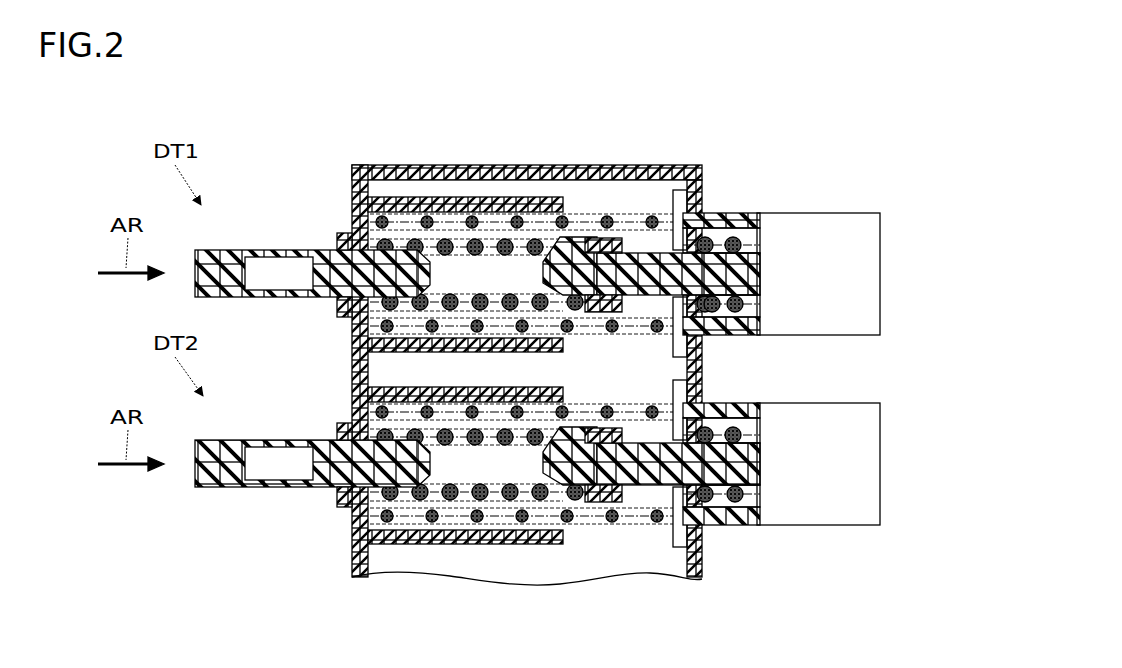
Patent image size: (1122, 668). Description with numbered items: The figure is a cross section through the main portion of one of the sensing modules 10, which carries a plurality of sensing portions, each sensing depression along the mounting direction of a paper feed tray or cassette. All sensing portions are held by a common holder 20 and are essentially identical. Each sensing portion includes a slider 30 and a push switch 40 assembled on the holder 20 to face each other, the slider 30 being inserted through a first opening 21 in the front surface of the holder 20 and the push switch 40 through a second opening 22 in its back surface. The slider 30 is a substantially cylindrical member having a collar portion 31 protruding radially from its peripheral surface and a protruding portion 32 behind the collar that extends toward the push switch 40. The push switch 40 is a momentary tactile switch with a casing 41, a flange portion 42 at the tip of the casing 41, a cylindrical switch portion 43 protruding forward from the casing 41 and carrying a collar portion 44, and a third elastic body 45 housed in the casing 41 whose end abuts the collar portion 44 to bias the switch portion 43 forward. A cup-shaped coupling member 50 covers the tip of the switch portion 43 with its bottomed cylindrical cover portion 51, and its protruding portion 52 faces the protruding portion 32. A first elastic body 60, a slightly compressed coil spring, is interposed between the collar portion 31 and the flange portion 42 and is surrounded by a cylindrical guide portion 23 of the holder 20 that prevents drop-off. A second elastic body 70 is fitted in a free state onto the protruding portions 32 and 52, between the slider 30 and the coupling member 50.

The sensing module 10 is at (862, 80).
The holder 20 is at (462, 172).
The first opening 21 is at (340, 266).
The second opening 22 is at (702, 222).
The cylindrical guide portion 23 is at (497, 203).
The slider 30 is at (243, 274).
The collar portion 31 is at (394, 215).
The protruding portion 32 is at (410, 277).
The push switch 40 is at (816, 228).
The casing 41 is at (723, 222).
The flange portion 42 is at (678, 207).
The switch portion 43 is at (640, 275).
The collar portion 44 is at (717, 308).
The third elastic body 45 is at (737, 246).
The coupling member 50 is at (583, 262).
The cover portion 51 is at (605, 240).
The protruding portion 52 is at (548, 268).
The first elastic body 60 is at (488, 333).
The second elastic body 70 is at (428, 310).